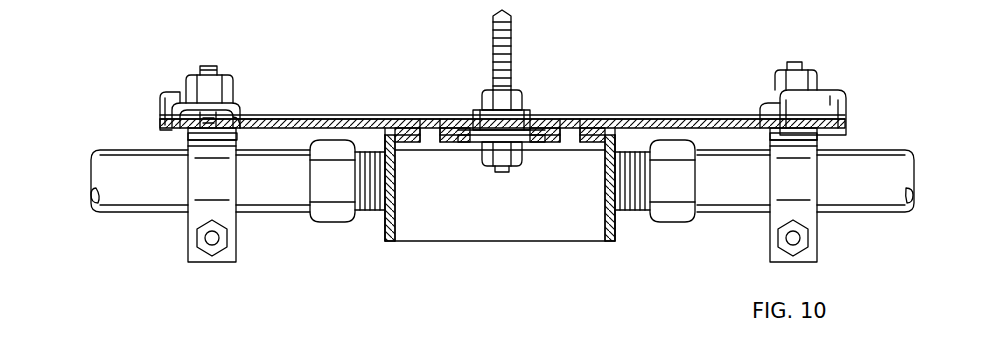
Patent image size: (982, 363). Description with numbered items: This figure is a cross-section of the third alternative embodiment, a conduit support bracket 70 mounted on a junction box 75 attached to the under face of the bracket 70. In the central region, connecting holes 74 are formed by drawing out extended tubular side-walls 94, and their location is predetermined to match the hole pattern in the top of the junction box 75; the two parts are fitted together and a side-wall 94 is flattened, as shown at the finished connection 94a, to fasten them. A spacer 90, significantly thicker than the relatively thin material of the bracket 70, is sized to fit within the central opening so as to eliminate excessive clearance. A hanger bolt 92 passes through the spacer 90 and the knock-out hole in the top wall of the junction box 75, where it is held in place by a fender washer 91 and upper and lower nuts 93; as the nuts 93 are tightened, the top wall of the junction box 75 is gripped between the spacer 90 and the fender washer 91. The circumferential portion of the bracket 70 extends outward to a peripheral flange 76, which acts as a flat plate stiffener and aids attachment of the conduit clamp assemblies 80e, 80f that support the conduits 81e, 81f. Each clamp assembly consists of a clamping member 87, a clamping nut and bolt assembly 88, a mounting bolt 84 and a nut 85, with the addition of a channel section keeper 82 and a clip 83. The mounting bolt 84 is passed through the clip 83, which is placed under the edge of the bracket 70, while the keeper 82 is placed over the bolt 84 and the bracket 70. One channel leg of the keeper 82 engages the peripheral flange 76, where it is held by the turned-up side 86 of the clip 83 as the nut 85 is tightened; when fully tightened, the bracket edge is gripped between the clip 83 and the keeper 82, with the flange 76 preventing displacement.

The conduit support bracket 70 is at (630, 119).
The connecting holes 74 is at (430, 104).
The junction box 75 is at (515, 242).
The peripheral flange 76 is at (280, 116).
The conduit clamp assembly 80e is at (822, 66).
The conduit clamp assembly 80f is at (145, 97).
The conduit 81e is at (865, 150).
The conduit 81f is at (150, 213).
The channel section keeper 82 is at (245, 100).
The clip 83 is at (160, 143).
The mounting bolt 84 is at (210, 70).
The nut 85 is at (228, 92).
The turned-up side 86 is at (178, 90).
The clamping member 87 is at (188, 245).
The clamping nut and bolt assembly 88 is at (230, 238).
The spacer 90 is at (492, 120).
The fender washer 91 is at (538, 142).
The hanger bolt 92 is at (511, 55).
The upper and lower nuts 93 is at (522, 100).
The extended tubular side-walls 94 is at (575, 140).
The finished connection 94a is at (432, 138).